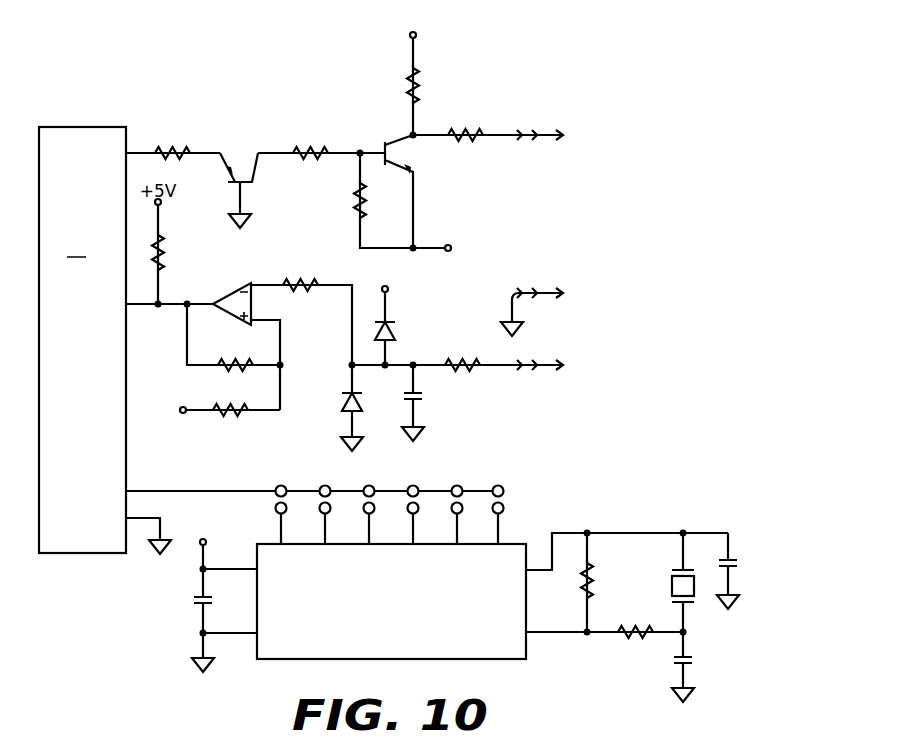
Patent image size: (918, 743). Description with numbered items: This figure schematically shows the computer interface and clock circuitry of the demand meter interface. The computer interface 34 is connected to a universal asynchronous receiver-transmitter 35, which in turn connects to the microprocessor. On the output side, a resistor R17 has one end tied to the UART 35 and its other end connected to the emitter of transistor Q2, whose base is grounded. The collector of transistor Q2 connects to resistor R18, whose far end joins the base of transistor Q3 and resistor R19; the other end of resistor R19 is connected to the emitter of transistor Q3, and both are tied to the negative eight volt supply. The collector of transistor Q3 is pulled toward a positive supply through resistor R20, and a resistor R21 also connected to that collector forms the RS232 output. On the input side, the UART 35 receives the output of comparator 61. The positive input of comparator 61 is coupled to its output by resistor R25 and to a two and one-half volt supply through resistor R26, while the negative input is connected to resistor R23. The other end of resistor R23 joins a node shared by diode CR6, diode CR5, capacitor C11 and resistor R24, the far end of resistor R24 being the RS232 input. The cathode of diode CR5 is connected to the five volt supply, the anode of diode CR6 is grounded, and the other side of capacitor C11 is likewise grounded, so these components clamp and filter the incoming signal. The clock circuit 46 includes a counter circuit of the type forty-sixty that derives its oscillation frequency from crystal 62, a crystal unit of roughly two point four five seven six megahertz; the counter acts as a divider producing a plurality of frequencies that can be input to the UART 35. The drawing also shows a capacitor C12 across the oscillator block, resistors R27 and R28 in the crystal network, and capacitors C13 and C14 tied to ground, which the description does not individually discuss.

The universal asynchronous receiver-transmitter 35 is at (82, 340).
The resistor R17 is at (173, 144).
The transistor Q2 is at (239, 187).
The resistor R18 is at (321, 144).
The resistor R19 is at (417, 205).
The transistor Q3 is at (402, 192).
The resistor R20 is at (422, 73).
The resistor R21 is at (488, 126).
The computer interface 34 is at (560, 173).
The comparator 61 is at (250, 283).
The resistor R23 is at (301, 313).
The resistor R25 is at (235, 357).
The resistor R26 is at (202, 402).
The diode CR6 is at (335, 407).
The diode CR5 is at (400, 318).
The capacitor C11 is at (431, 402).
The resistor R24 is at (457, 356).
The clock circuit 46 is at (606, 517).
The capacitor C12 is at (224, 605).
The resistor R27 is at (604, 583).
The resistor R28 is at (651, 624).
The crystal 62 is at (701, 605).
The capacitor C13 is at (745, 571).
The capacitor C14 is at (701, 667).